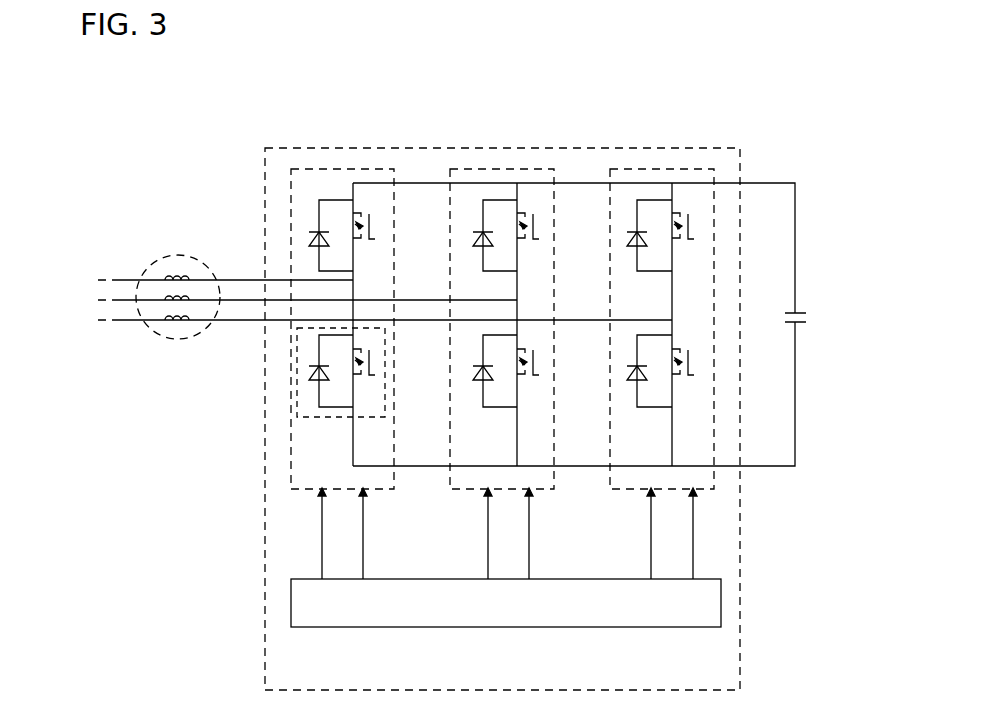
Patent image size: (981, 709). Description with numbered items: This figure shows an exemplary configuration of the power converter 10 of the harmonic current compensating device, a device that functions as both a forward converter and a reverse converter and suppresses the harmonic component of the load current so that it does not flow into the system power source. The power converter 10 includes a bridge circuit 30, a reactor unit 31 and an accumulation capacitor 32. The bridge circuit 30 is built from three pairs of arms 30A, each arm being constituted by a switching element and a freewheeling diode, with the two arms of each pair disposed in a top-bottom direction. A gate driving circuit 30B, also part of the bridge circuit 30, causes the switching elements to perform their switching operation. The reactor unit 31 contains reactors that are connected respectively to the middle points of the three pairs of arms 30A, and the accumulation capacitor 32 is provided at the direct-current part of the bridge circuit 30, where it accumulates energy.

The power converter 10 is at (712, 136).
The bridge circuit 30 is at (741, 510).
The arm 30A is at (325, 418).
The gate driving circuit 30B is at (664, 630).
The reactor unit 31 is at (162, 341).
The accumulation capacitor 32 is at (791, 327).